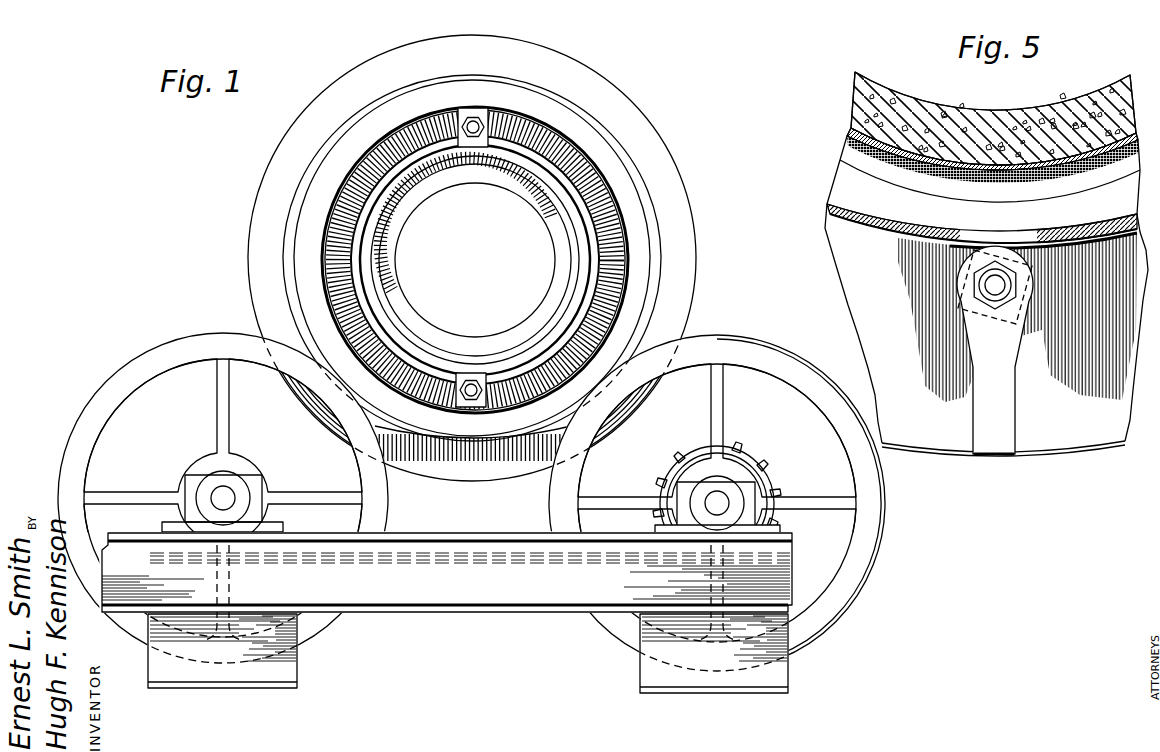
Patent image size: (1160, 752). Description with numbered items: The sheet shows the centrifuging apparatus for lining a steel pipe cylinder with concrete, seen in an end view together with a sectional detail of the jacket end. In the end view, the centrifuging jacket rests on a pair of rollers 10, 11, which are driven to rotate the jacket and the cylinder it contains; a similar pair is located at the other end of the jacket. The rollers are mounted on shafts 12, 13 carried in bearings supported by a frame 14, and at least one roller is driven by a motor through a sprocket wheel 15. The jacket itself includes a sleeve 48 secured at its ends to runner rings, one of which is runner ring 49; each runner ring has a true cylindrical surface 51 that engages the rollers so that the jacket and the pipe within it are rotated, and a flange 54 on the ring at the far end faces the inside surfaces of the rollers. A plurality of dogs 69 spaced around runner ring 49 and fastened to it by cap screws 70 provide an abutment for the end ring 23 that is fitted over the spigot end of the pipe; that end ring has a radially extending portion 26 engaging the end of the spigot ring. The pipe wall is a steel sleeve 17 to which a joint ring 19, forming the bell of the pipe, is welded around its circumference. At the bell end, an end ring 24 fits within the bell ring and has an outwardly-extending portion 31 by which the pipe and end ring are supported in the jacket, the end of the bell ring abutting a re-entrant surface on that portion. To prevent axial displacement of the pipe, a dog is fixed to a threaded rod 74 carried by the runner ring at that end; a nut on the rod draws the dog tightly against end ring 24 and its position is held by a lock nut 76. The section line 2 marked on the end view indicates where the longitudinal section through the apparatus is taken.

In FIG. 1, the carriage wheel 10 is at (768, 327).
In FIG. 1, the carriage wheel 11 is at (155, 356).
In FIG. 1, the wheel axle hub 12 is at (722, 498).
In FIG. 1, the wheel axle hub 13 is at (230, 492).
In FIG. 1, the rail 14 is at (488, 598).
In FIG. 1, the sprocket gear 15 is at (745, 447).
In FIG. 5, the abrasive segment 17 is at (852, 112).
In FIG. 5, the cement layer 19 is at (850, 135).
In FIG. 1, the hub ring 23 is at (562, 222).
In FIG. 5, the wheel ring 24 is at (828, 193).
In FIG. 1, the hub bore ring 26 is at (558, 259).
In FIG. 5, the groove 31 is at (848, 184).
In FIG. 5, the wheel body 48 is at (881, 237).
In FIG. 1, the mounting ring 49 is at (523, 102).
In FIG. 1, the grinding wheel 51 is at (282, 250).
In FIG. 5, the rim 54 is at (935, 448).
In FIG. 1, the clamp block 69 is at (479, 108).
In FIG. 1, the clamp nut 70 is at (468, 122).
In FIG. 5, the bolt 74 is at (998, 300).
In FIG. 5, the clamp lug 76 is at (991, 447).
In FIG. 1, the section line 2- 2 is at (500, 312).